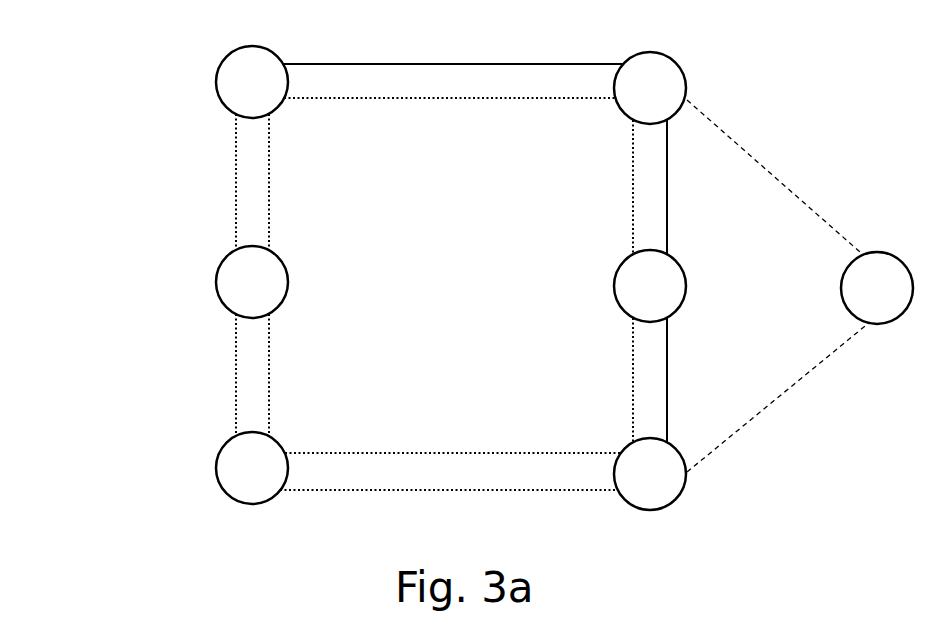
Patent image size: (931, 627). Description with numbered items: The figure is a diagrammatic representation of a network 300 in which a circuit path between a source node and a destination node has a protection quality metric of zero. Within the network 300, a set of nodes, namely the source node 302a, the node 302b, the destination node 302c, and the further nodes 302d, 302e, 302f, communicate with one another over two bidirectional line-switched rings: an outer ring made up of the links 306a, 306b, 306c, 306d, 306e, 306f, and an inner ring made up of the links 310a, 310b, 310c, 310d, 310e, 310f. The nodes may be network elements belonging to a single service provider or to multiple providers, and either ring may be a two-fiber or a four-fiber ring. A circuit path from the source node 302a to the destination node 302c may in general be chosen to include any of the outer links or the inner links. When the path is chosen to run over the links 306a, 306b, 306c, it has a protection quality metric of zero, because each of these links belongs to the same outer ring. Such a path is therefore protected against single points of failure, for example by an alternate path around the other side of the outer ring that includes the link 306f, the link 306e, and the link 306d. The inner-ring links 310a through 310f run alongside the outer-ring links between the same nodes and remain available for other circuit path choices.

The network 300 is at (108, 102).
The source node 302a is at (267, 46).
The node 302b is at (678, 57).
The destination node 302c is at (667, 507).
The node 302d is at (273, 497).
The node 302e is at (685, 280).
The node 302f is at (285, 258).
The link 306a is at (515, 64).
The link 306b is at (668, 145).
The link 306c is at (668, 353).
The link 306d is at (532, 490).
The link 306e is at (233, 335).
The link 306f is at (234, 202).
The link 310a is at (550, 100).
The link 310b is at (633, 130).
The link 310c is at (630, 360).
The link 310d is at (532, 453).
The link 310e is at (268, 362).
The link 310f is at (270, 141).